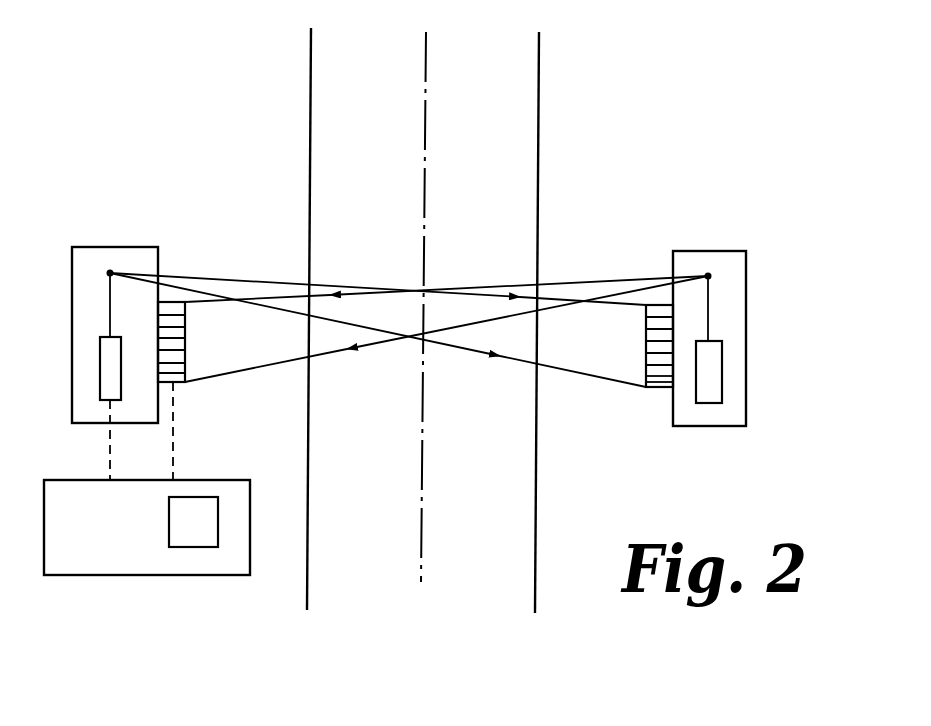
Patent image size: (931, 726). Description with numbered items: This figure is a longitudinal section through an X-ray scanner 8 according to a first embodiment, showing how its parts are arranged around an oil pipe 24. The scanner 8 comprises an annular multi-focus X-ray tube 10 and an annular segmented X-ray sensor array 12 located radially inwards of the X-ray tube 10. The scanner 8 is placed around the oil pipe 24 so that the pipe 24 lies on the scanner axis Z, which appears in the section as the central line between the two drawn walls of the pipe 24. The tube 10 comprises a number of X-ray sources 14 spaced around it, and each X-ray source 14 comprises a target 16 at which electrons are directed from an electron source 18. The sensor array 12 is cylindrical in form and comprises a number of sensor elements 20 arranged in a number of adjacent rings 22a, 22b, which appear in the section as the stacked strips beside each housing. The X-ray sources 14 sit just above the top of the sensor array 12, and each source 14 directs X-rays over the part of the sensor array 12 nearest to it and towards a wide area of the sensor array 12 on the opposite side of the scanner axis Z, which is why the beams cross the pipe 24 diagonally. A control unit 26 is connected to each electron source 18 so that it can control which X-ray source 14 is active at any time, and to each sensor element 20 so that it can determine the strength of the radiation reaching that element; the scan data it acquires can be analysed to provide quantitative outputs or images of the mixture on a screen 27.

The X-ray scanner 8 is at (700, 236).
The multi-focus X-ray tube 10 is at (737, 315).
The segmented X-ray sensor array 12 is at (614, 394).
The X-ray source 14 is at (710, 274).
The target 16 is at (718, 275).
The electron source 18 is at (708, 388).
The sensor element 20 is at (185, 338).
The ring 22a is at (647, 382).
The ring 22b is at (647, 375).
The oil pipe 24 is at (539, 117).
The control unit 26 is at (80, 576).
The screen 27 is at (197, 532).
The scanner axis Z is at (426, 68).